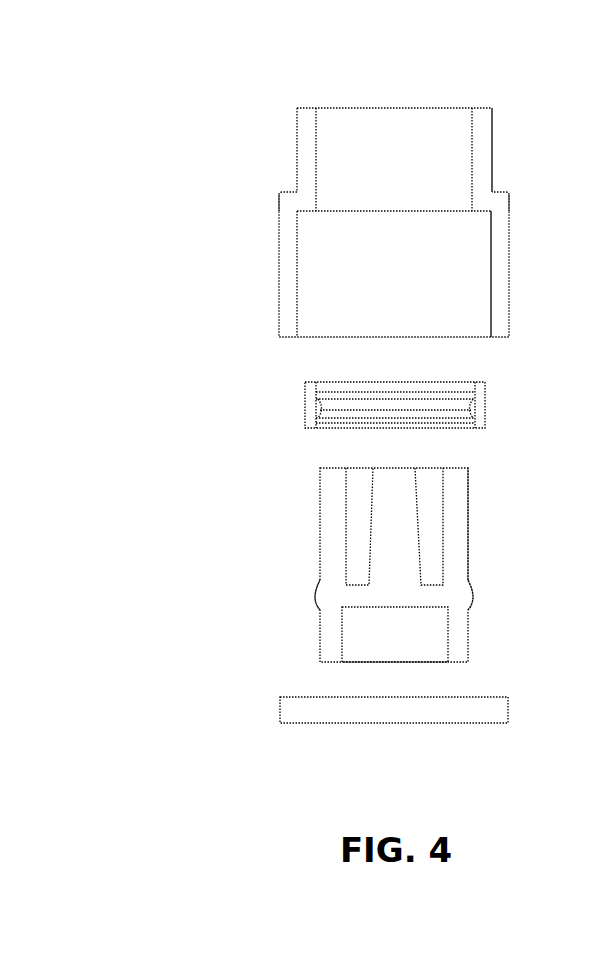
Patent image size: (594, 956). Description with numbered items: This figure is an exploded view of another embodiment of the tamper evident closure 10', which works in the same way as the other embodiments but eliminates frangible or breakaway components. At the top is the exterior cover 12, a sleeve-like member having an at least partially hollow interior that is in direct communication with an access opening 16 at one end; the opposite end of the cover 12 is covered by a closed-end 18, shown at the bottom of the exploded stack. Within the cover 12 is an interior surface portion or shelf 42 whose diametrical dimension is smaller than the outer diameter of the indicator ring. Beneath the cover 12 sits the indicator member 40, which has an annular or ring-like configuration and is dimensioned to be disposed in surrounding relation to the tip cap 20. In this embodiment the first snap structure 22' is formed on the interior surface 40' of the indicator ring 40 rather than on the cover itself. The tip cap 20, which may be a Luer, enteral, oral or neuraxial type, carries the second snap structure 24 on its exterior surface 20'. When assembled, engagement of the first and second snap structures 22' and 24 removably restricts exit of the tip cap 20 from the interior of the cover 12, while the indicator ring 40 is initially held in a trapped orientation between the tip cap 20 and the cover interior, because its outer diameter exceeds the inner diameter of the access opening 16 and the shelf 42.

The closure 10' is at (328, 416).
The exterior cover 12 is at (490, 138).
The access opening 16 is at (387, 112).
The shelf 42 is at (315, 210).
The indicator member 40 is at (429, 405).
The first snap structure 22' is at (350, 418).
The interior surface of indicator member 40' is at (432, 440).
The tip cap 20 is at (444, 565).
The exterior surface of tip cap 20' is at (517, 524).
The second snap structure 24 is at (317, 600).
The closed-end 18 is at (288, 715).